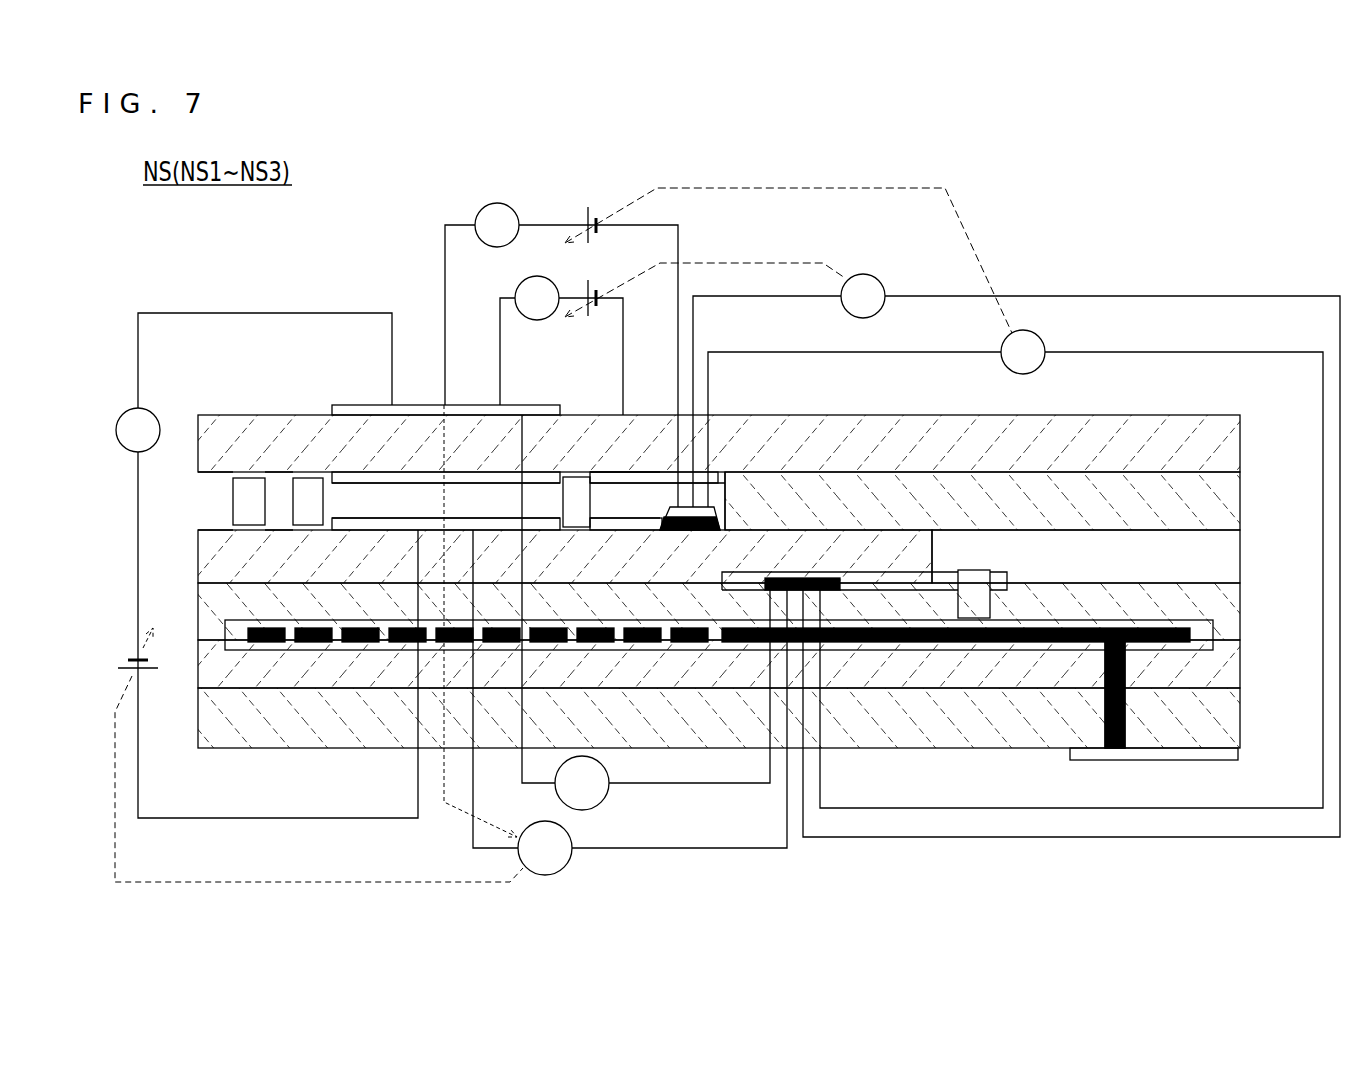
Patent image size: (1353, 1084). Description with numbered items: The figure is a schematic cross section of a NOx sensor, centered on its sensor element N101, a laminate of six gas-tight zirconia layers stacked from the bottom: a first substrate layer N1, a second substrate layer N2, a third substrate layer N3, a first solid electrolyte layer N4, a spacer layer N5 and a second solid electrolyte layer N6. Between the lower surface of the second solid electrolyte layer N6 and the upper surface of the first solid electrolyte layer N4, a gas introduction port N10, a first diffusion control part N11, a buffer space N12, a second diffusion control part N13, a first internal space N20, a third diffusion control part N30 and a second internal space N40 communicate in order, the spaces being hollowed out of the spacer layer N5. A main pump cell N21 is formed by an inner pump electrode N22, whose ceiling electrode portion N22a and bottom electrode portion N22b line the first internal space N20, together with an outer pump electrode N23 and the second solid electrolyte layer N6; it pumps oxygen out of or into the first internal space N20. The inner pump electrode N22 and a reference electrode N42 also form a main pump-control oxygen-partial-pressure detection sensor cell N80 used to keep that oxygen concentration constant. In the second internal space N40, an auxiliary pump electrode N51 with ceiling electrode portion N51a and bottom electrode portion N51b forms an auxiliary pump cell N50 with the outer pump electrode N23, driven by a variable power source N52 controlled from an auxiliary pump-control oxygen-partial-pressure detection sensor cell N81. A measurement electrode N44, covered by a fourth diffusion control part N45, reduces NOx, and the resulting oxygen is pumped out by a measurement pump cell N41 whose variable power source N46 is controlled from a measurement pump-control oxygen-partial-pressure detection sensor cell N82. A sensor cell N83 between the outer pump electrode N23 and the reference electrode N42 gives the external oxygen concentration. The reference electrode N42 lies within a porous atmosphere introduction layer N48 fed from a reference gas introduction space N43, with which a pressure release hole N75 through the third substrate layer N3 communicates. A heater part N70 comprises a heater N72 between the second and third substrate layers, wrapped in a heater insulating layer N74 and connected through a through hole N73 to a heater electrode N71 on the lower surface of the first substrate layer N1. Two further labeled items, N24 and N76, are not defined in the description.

The first substrate layer N1 is at (1241, 719).
The second substrate layer N2 is at (1241, 672).
The third substrate layer N3 is at (1241, 601).
The first solid electrolyte layer N4 is at (212, 556).
The spacer layer N5 is at (1240, 491).
The second solid electrolyte layer N6 is at (1240, 449).
The gas introduction port N10 is at (213, 501).
The first diffusion control part N11 is at (248, 478).
The buffer space N12 is at (280, 488).
The second diffusion control part N13 is at (305, 478).
The first internal space N20 is at (486, 503).
The main pump cell N21 is at (290, 564).
The inner pump electrode N22 is at (446, 436).
The ceiling electrode portion N22a is at (465, 472).
The bottom electrode portion N22b is at (410, 518).
The outer pump electrode N23 is at (350, 405).
The variable power supply N24 is at (118, 668).
The third diffusion control part N30 is at (577, 477).
The second internal space N40 is at (603, 472).
The measurement pump cell N41 is at (723, 492).
The reference electrode N42 is at (825, 588).
The reference gas introduction space N43 is at (1228, 548).
The measurement electrode N44 is at (680, 532).
The fourth diffusion control part N45 is at (668, 509).
The variable power source N46 is at (590, 214).
The atmosphere introduction layer N48 is at (748, 572).
The auxiliary pump cell N50 is at (672, 334).
The auxiliary pump electrode N51 is at (649, 468).
The ceiling electrode portion N51a is at (720, 472).
The bottom electrode portion N51b is at (600, 530).
The variable power source N52 is at (590, 322).
The heater part N70 is at (754, 710).
The heater electrode N71 is at (1240, 756).
The heater N72 is at (282, 650).
The through hole N73 is at (1128, 713).
The heater insulating layer N74 is at (238, 650).
The pressure release hole N75 is at (975, 582).
The heater lead N76 is at (1103, 705).
The main pump-control oxygen-partial-pressure detection sensor cell N80 is at (598, 857).
The auxiliary pump-control oxygen-partial-pressure detection sensor cell N81 is at (1106, 296).
The measurement pump-control oxygen-partial-pressure detection sensor cell N82 is at (1117, 352).
The sensor cell N83 is at (626, 789).
The sensor element N101 is at (719, 571).